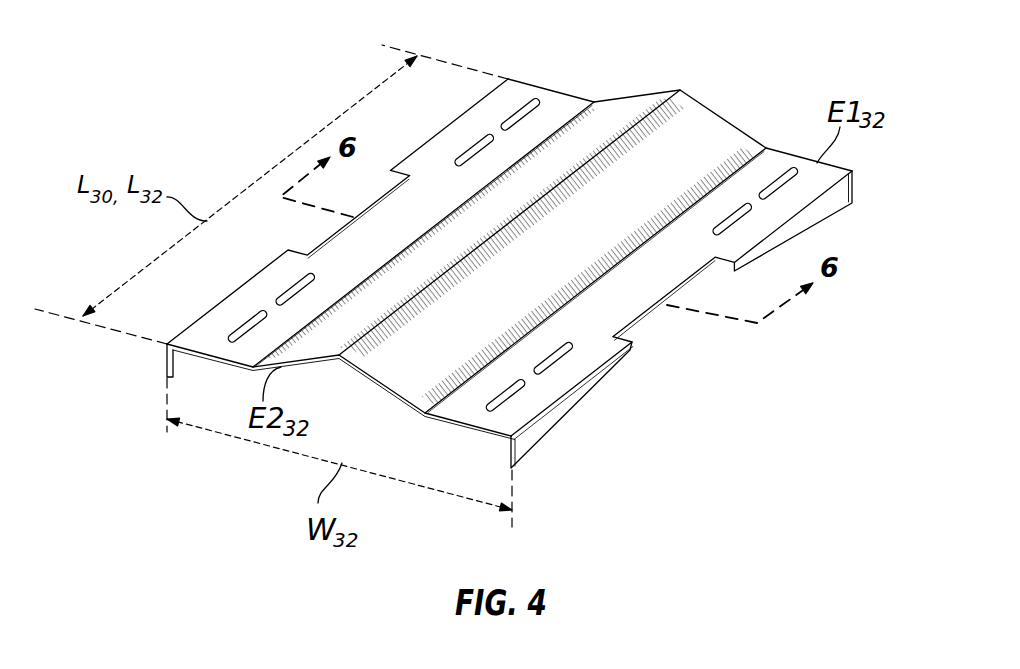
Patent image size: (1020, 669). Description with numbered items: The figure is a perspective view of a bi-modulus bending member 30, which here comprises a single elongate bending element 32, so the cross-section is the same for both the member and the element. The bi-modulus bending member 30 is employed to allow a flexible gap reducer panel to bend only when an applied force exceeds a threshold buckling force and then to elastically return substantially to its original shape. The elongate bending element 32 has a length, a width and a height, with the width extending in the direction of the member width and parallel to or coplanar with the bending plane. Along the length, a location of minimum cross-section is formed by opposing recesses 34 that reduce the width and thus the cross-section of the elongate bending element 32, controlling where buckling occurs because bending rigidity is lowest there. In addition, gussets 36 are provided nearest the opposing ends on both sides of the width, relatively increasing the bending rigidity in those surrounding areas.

The bi-modulus bending member 30 is at (539, 249).
The elongate bending element 32 is at (539, 277).
The recesses 34 is at (323, 245).
The gussets 36 is at (840, 202).